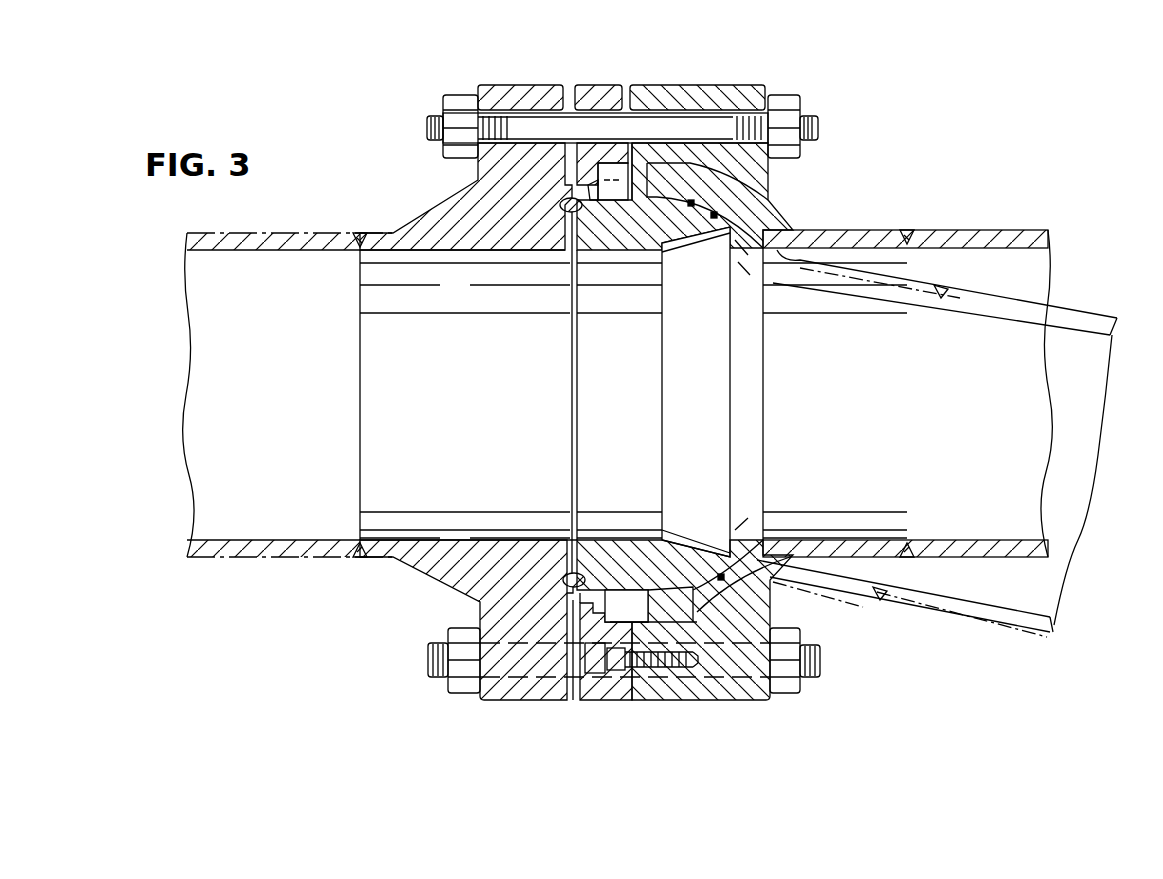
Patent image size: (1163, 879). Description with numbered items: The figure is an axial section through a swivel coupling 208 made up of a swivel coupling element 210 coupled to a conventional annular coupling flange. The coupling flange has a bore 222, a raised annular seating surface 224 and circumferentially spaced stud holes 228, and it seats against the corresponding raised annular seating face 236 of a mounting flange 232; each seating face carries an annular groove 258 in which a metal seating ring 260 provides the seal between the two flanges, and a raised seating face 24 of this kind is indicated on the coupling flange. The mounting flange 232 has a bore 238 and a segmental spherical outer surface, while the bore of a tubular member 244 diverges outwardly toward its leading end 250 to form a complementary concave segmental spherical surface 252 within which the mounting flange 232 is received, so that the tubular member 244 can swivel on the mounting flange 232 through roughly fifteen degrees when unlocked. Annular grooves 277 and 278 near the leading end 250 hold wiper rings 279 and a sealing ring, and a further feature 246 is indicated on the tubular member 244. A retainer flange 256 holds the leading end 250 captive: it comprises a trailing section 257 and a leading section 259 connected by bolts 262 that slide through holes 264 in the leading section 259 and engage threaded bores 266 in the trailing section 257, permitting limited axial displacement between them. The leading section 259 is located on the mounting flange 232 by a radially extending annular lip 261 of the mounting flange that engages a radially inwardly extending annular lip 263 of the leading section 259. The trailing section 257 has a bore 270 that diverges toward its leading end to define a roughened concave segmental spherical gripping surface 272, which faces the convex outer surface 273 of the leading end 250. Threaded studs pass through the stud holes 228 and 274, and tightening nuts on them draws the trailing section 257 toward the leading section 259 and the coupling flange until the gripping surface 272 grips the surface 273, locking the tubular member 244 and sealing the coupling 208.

The raised annular seating face 24 is at (420, 604).
The swivel coupling 208 is at (948, 650).
The swivel coupling element 210 is at (851, 658).
The bore 222 is at (438, 540).
The seating surface 224 is at (563, 253).
The stud holes 228 is at (531, 88).
The mounting flange 232 is at (678, 235).
The seating face 236 is at (560, 265).
The bore 238 is at (623, 247).
The tubular member 244 is at (907, 277).
The weld 246 is at (900, 236).
The leading end 250 is at (605, 540).
The segmental spherical surface 252 is at (638, 540).
The retainer flange 256 is at (827, 716).
The trailing section 257 is at (742, 702).
The annular groove 258 is at (565, 575).
The leading section 259 is at (583, 702).
The metal seating ring 260 is at (497, 702).
The annular lip 261 is at (598, 183).
The bolts 262 is at (642, 700).
The annular lip 263 is at (592, 252).
The holes 264 is at (607, 700).
The threaded bores 266 is at (647, 700).
The bore 270 is at (770, 208).
The gripping surface 272 is at (790, 583).
The outer surface 273 is at (790, 607).
The stud holes 274 is at (705, 105).
The annular grooves 277 is at (713, 570).
The annular groove 278 is at (693, 580).
The wiper rings 279 is at (740, 553).